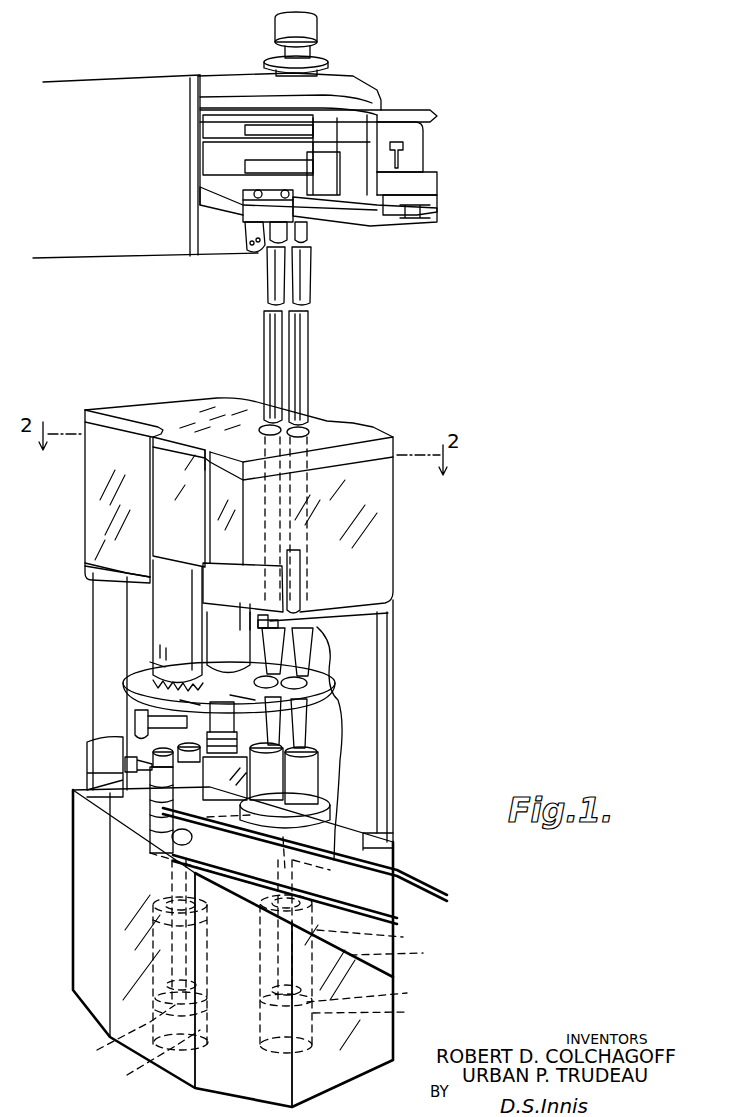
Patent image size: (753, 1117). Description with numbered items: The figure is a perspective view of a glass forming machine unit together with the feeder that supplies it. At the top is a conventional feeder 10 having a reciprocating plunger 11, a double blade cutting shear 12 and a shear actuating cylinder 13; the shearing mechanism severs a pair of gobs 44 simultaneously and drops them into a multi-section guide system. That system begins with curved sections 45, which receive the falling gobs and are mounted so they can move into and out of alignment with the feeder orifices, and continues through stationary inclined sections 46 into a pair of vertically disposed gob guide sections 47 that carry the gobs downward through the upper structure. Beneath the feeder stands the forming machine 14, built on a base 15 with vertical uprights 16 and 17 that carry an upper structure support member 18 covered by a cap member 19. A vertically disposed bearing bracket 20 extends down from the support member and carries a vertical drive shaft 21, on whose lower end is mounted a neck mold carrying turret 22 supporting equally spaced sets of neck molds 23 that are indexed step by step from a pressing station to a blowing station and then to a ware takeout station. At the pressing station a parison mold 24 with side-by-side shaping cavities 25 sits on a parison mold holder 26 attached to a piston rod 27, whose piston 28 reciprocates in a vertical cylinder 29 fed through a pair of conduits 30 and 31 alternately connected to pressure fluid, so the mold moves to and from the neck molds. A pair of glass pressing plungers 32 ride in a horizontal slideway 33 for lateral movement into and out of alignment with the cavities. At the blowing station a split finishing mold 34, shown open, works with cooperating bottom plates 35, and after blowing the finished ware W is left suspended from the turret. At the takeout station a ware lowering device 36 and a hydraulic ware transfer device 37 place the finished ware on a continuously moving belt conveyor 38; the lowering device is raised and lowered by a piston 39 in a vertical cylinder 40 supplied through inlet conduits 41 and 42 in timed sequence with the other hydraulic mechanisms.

The feeder 10 is at (122, 170).
The reciprocating plunger 11 is at (300, 30).
The double blade cutting shear 12 is at (247, 217).
The shear actuating cylinder 13 is at (362, 180).
The forming machine 14 is at (412, 553).
The base 15 is at (90, 934).
The vertical upright 16 is at (110, 633).
The vertical upright 17 is at (372, 711).
The upper structure support member 18 is at (100, 486).
The covering cap member 19 is at (108, 430).
The bearing bracket 20 is at (237, 637).
The drive shaft 21 is at (225, 672).
The neck mold carrying turret 22 is at (323, 685).
The neck molds 23 is at (300, 660).
The parison mold 24 is at (300, 782).
The shaping cavities 25 is at (305, 745).
The parison mold holder 26 is at (325, 816).
The piston rod 27 is at (330, 905).
The piston 28 is at (368, 998).
The vertical cylinder 29 is at (397, 956).
The conduit 30 is at (371, 939).
The conduit 31 is at (371, 1016).
The glass pressing plungers 32 is at (277, 650).
The horizontal slideway 33 is at (268, 612).
The split finishing mold 34 is at (140, 722).
The bottom plates 35 is at (225, 751).
The ware lowering device 36 is at (160, 830).
The hydraulic ware transfer device 37 is at (100, 755).
The belt conveyor 38 is at (370, 880).
The piston 39 is at (125, 1033).
The cylinder 40 is at (147, 1059).
The inlet conduit 41 is at (220, 930).
The inlet conduit 42 is at (220, 1012).
The gobs 44 is at (308, 234).
The curved sections 45 is at (300, 288).
The inclined sections 46 is at (300, 372).
The vertically disposed gob guide sections 47 is at (295, 510).
The blown ware W is at (157, 820).